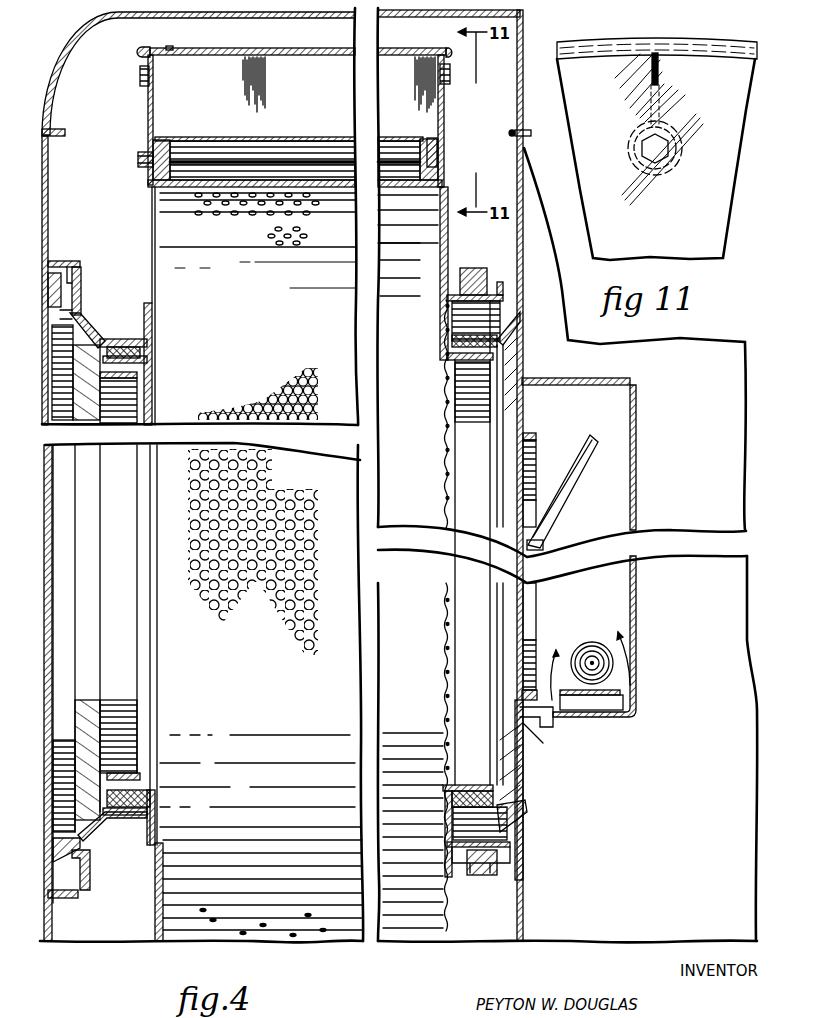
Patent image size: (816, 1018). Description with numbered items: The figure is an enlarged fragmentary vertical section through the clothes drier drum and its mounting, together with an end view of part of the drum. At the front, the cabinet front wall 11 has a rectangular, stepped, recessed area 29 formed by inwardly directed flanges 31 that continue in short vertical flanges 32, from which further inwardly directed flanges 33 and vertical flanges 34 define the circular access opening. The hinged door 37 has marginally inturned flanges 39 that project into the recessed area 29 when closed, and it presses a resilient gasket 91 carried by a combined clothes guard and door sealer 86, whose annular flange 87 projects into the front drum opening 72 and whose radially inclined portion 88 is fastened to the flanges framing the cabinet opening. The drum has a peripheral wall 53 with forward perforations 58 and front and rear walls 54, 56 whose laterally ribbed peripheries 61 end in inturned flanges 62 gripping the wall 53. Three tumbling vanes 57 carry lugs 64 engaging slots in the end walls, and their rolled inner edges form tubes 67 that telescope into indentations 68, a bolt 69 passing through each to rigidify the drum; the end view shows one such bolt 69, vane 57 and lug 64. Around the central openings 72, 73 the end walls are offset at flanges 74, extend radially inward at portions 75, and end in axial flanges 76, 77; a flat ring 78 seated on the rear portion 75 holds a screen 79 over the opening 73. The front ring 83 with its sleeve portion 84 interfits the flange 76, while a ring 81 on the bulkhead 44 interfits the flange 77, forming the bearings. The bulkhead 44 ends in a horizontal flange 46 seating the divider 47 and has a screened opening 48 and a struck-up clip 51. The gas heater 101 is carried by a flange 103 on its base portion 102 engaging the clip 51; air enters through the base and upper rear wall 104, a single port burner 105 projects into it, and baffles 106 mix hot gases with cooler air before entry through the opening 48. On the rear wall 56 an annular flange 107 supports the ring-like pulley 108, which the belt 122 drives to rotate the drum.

In FIG. 4, the front wall 11 is at (45, 160).
In FIG. 4, the recessed area 29 is at (47, 893).
In FIG. 4, the inwardly directed flanges 31 is at (50, 261).
In FIG. 4, the short vertical flanges 32 is at (70, 268).
In FIG. 4, the inwardly directed flanges 33 is at (82, 268).
In FIG. 4, the vertical flanges 34 is at (78, 316).
In FIG. 4, the door 37 is at (46, 690).
In FIG. 4, the inturned flanges 39 is at (47, 288).
In FIG. 4, the bulkhead 44 is at (524, 418).
In FIG. 4, the horizontal flange 46 is at (528, 140).
In FIG. 4, the divider 47 is at (521, 97).
In FIG. 4, the circular opening 48 is at (537, 462).
In FIG. 4, the clip 51 is at (533, 740).
In FIG. 4, the peripheral wall 53 is at (384, 50).
In FIG. 4, the front wall 54 is at (155, 915).
In FIG. 4, the rear wall 56 is at (445, 930).
In FIG. 4, the tumbling vanes 57 is at (184, 85).
In FIG. 11, the tumbling vanes 57 is at (660, 104).
In FIG. 4, the perforations 58 is at (236, 402).
In FIG. 4, the ribs 61 is at (140, 54).
In FIG. 4, the inturned flanges 62 is at (170, 46).
In FIG. 4, the lugs 64 is at (138, 86).
In FIG. 11, the lugs 64 is at (660, 70).
In FIG. 4, the tube 67 is at (178, 196).
In FIG. 4, the indentations 68 is at (148, 170).
In FIG. 4, the bolt 69 is at (414, 160).
In FIG. 11, the bolt 69 is at (672, 146).
In FIG. 4, the central opening 72 is at (147, 541).
In FIG. 4, the central opening 73 is at (460, 458).
In FIG. 4, the flanges 74 is at (155, 312).
In FIG. 4, the radially inward portion 75 is at (153, 338).
In FIG. 4, the axially directed flange 76 is at (140, 375).
In FIG. 4, the axially directed flange 77 is at (443, 383).
In FIG. 4, the flat ring 78 is at (442, 343).
In FIG. 4, the screen 79 is at (443, 428).
In FIG. 4, the ring 81 is at (512, 340).
In FIG. 4, the ring 83 is at (62, 338).
In FIG. 4, the sleeve portion 84 is at (110, 339).
In FIG. 4, the clothes guard and door sealer 86 is at (66, 816).
In FIG. 4, the annular flange 87 is at (114, 773).
In FIG. 4, the inclined portion 88 is at (88, 348).
In FIG. 4, the resilient gasket 91 is at (47, 316).
In FIG. 4, the gas heater 101 is at (572, 378).
In FIG. 4, the base portion 102 is at (560, 712).
In FIG. 4, the flange 103 is at (520, 714).
In FIG. 4, the upper rear wall 104 is at (637, 446).
In FIG. 4, the single port burner 105 is at (578, 642).
In FIG. 4, the baffles 106 is at (585, 470).
In FIG. 4, the annular flange 107 is at (450, 272).
In FIG. 4, the pulley 108 is at (447, 870).
In FIG. 4, the belt 122 is at (480, 878).